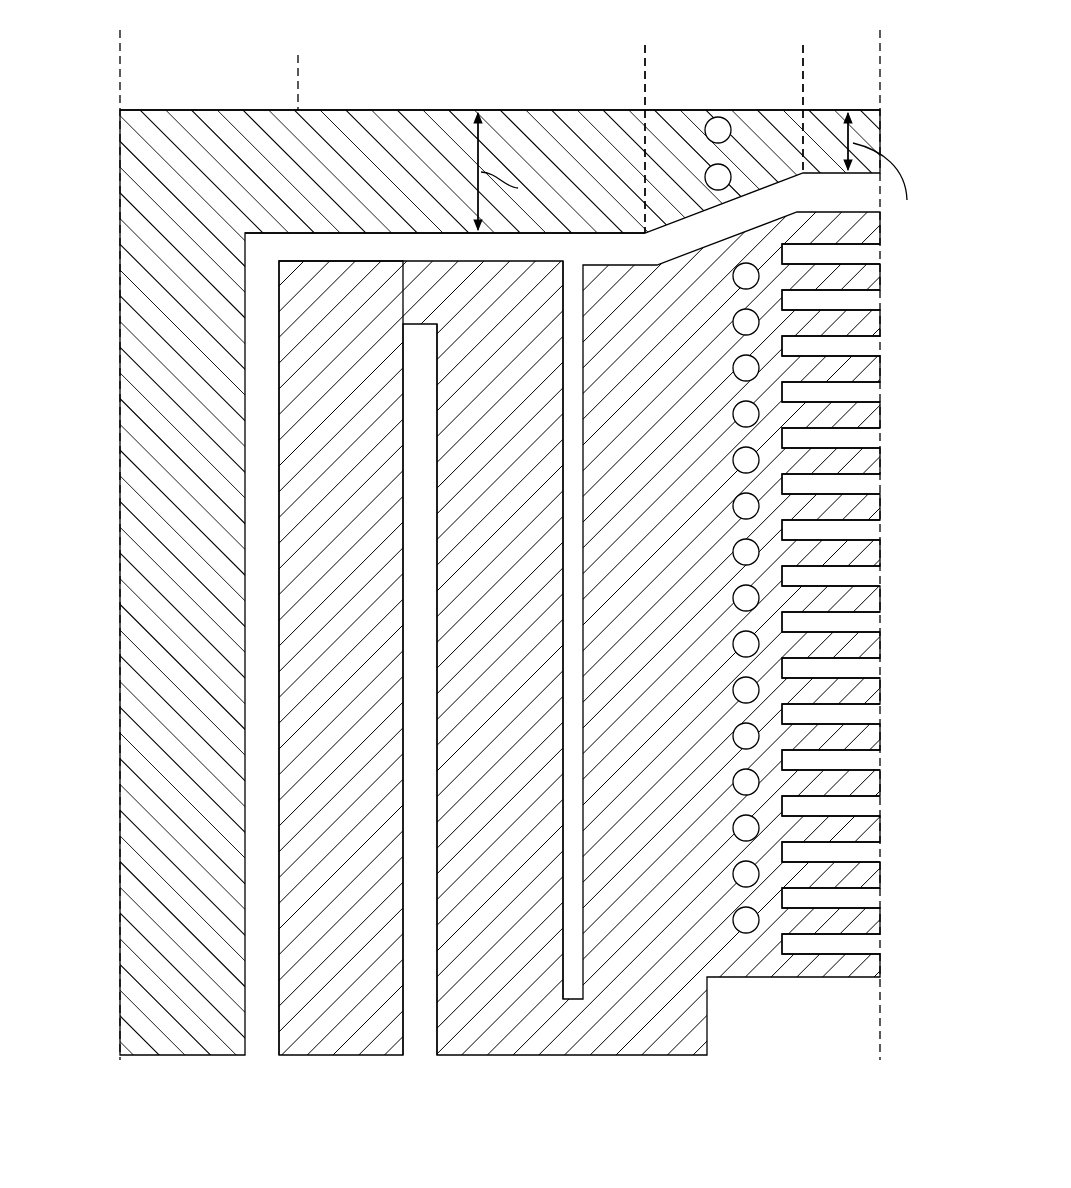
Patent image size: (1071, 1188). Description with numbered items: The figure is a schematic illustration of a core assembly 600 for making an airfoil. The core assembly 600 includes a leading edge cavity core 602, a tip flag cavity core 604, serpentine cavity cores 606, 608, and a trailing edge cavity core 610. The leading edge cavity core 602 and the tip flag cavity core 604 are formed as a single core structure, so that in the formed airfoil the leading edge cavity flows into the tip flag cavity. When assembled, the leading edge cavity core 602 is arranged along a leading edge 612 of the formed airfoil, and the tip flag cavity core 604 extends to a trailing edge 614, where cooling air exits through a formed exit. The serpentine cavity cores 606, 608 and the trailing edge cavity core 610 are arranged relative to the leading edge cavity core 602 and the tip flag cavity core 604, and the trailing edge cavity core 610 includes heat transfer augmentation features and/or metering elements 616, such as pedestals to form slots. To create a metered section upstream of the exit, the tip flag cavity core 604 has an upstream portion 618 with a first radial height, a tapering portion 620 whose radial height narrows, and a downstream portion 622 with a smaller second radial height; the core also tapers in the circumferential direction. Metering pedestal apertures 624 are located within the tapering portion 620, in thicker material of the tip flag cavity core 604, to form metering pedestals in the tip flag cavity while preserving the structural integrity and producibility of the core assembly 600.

The core assembly 600 is at (116, 54).
The leading edge cavity core 602 is at (148, 596).
The tip flag cavity core 604 is at (330, 108).
The serpentine cavity core 606 is at (335, 1035).
The serpentine cavity core 608 is at (487, 1015).
The trailing edge cavity core 610 is at (642, 1025).
The leading edge 612 is at (118, 362).
The trailing edge 614 is at (882, 88).
The heat transfer augmentation features and/or metering elements 616 is at (754, 960).
The upstream portion 618 is at (643, 62).
The tapering portion 620 is at (647, 62).
The downstream portion 622 is at (880, 62).
The metering pedestal apertures 624 is at (696, 134).